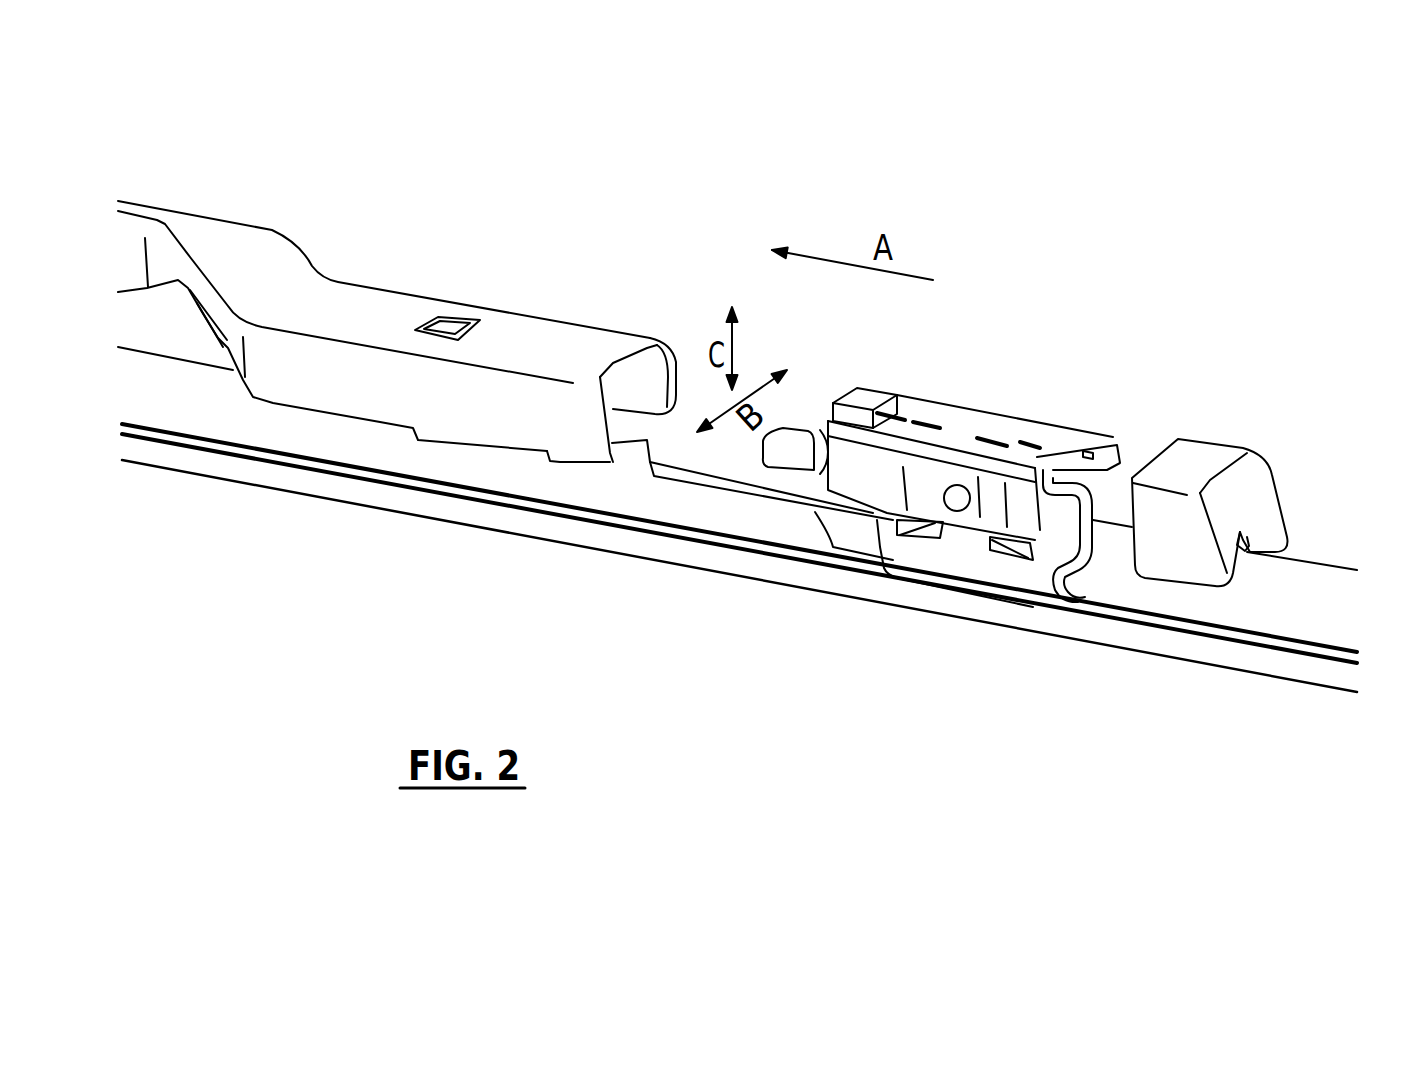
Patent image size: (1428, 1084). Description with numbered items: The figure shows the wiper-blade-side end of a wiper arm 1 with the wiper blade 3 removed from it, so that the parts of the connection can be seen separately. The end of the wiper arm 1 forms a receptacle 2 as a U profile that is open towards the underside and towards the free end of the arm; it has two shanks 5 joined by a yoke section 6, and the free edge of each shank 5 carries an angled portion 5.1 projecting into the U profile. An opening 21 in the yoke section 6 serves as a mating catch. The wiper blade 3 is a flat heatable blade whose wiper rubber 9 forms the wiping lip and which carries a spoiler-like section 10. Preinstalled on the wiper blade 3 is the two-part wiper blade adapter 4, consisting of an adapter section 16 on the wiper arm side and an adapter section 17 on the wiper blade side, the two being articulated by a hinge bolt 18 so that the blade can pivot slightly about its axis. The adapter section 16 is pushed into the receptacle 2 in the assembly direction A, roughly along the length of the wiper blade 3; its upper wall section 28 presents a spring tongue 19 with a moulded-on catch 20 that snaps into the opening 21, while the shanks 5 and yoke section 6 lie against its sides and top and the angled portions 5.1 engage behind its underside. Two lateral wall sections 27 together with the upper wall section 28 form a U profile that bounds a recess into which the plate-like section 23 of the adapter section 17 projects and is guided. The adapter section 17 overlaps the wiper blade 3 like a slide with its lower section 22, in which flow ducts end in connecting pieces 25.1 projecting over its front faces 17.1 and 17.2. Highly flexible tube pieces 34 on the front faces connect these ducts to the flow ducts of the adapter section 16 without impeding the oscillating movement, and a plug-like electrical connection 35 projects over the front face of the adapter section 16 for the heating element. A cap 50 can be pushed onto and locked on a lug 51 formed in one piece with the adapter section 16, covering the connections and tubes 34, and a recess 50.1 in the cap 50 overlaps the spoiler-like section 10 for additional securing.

The wiper arm 1 is at (313, 220).
The receptacle 2 is at (537, 317).
The wiper blade 3 is at (727, 595).
The wiper blade adapter 4 is at (995, 314).
The shank 5 is at (655, 377).
The angled portion 5.1 is at (514, 455).
The yoke section 6 is at (383, 310).
The carrier 9 is at (853, 580).
The spoiler-like section 10 is at (1305, 597).
The adapter section on the wiper arm side 16 is at (1072, 391).
The adapter section on the wiper blade side 17 is at (973, 627).
The front face 17.1 is at (875, 470).
The front face 17.2 is at (1080, 595).
The hinge bolt 18 is at (957, 515).
The spring tongue 19 is at (897, 417).
The catch 20 is at (857, 390).
The opening 21 is at (452, 320).
The lower section 22 is at (1017, 580).
The plate-like section 23 is at (963, 548).
The connecting piece 25.1 is at (1050, 603).
The wall section 27 is at (840, 482).
The upper wall section 28 is at (980, 425).
The flexible tube piece 34 is at (1090, 510).
The electrical connection 35 is at (756, 491).
The cap 50 is at (1213, 453).
The recess 50.1 is at (1243, 537).
The lug 51 is at (1090, 448).